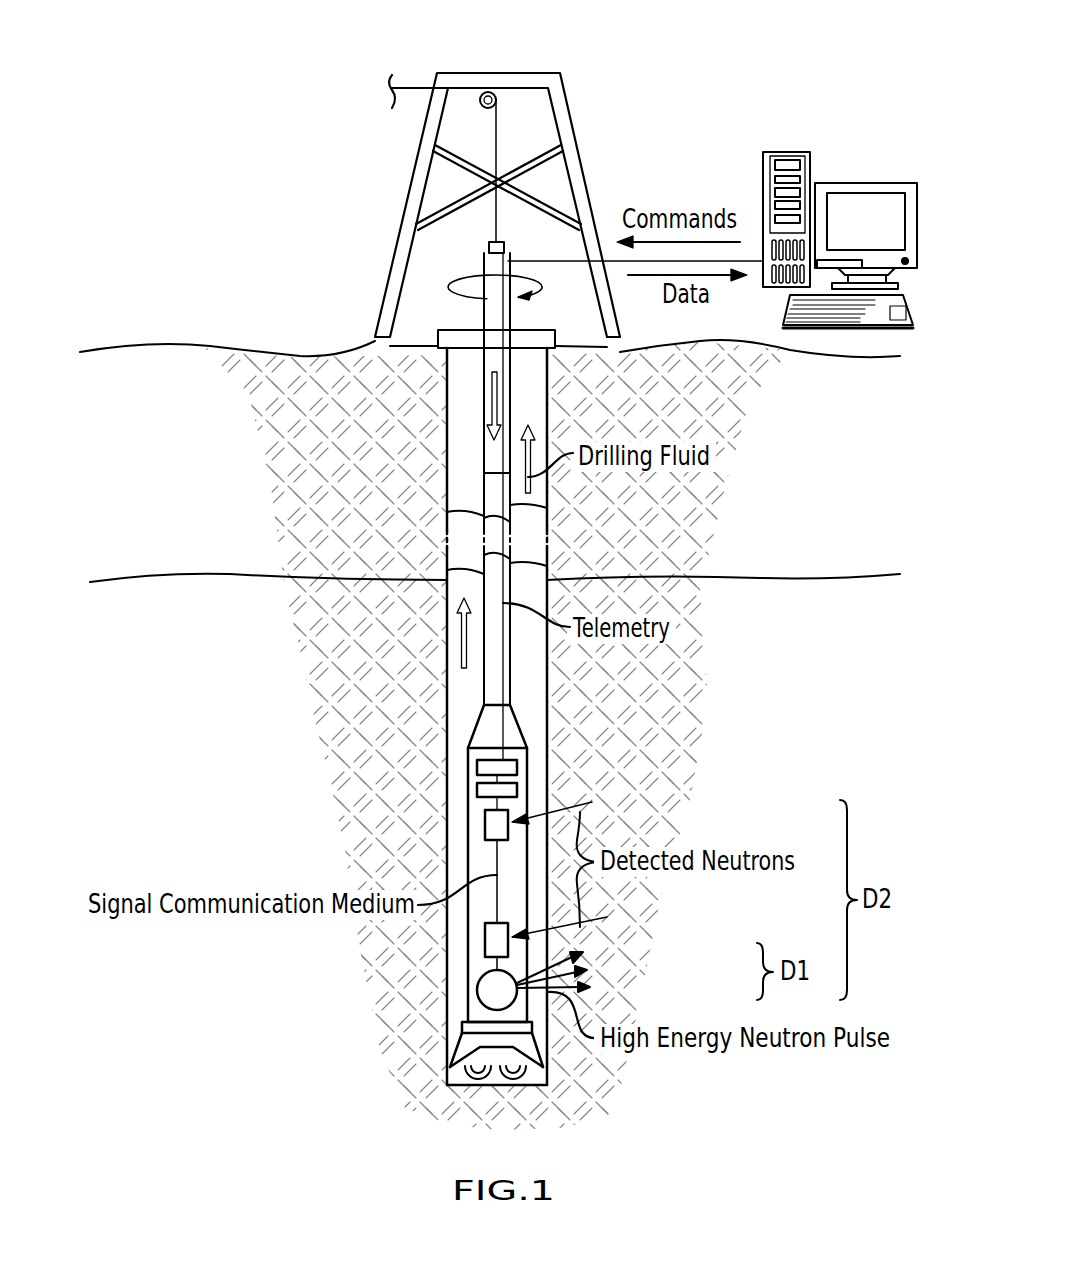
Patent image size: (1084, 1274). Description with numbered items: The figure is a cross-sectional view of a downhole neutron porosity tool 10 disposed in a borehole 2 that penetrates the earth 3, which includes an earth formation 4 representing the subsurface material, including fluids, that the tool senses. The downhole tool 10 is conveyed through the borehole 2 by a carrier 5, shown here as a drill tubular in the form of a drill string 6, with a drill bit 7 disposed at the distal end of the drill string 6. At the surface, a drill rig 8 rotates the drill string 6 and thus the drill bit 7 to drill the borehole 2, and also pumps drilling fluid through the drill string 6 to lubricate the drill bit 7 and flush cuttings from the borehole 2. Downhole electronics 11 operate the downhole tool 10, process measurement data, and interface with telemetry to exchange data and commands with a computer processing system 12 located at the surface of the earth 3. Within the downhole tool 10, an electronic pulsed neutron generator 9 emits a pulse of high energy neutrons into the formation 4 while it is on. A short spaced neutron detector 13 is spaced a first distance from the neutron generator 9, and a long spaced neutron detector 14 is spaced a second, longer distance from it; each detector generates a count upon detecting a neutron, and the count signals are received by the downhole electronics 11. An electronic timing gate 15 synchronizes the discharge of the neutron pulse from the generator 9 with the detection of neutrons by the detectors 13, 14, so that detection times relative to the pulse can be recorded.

The borehole 2 is at (468, 500).
The earth 3 is at (263, 463).
The earth formation 4 is at (328, 636).
The carrier 5 is at (483, 455).
The drill string 6 is at (485, 692).
The drill bit 7 is at (463, 1047).
The drill rig 8 is at (322, 224).
The electronic pulsed neutron generator 9 is at (487, 987).
The downhole tool 10 is at (478, 733).
The downhole electronics 11 is at (477, 768).
The computer processing system 12 is at (793, 152).
The short spaced neutron detector 13 is at (485, 938).
The long spaced neutron detector 14 is at (485, 822).
The electronic timing gate 15 is at (477, 790).